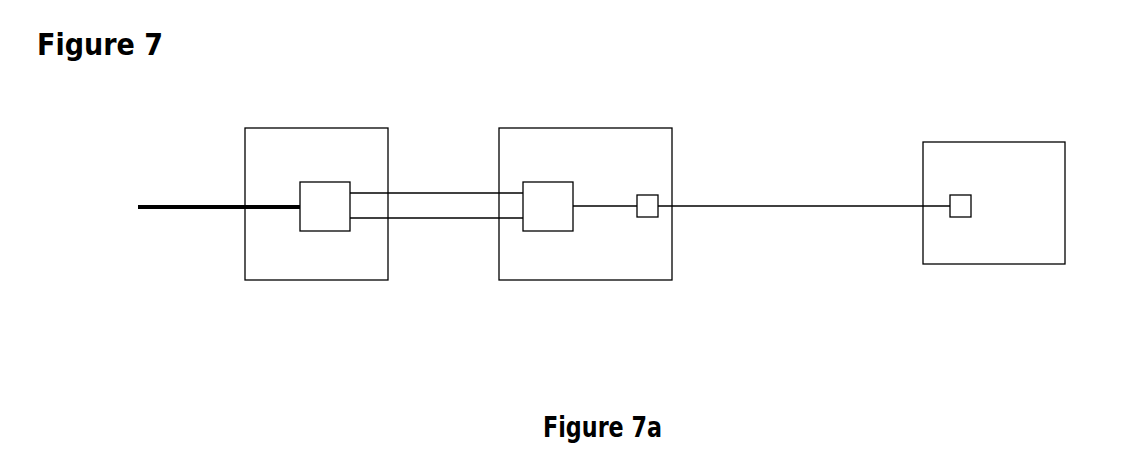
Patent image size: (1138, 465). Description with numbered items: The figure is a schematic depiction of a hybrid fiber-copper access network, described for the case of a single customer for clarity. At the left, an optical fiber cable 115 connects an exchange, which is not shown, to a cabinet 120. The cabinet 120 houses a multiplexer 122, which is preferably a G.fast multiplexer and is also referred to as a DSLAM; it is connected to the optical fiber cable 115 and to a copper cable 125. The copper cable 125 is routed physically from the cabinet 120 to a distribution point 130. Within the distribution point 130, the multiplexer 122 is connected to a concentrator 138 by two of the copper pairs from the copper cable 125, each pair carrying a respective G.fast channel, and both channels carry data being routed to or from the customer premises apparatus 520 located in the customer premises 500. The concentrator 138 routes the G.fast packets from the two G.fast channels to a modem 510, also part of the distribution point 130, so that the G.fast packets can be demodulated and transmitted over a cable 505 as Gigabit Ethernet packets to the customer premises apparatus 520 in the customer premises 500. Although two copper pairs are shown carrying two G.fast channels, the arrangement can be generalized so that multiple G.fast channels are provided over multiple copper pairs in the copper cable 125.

The optical fiber cable 115 is at (170, 209).
The cabinet 120 is at (315, 125).
The multiplexer 122 is at (323, 233).
The copper cable 125 is at (443, 195).
The distribution point 130 is at (587, 283).
The concentrator 138 is at (546, 180).
The cable 505 is at (780, 208).
The modem 510 is at (648, 194).
The customer premises apparatus 520 is at (960, 194).
The customer premises 500 is at (998, 140).